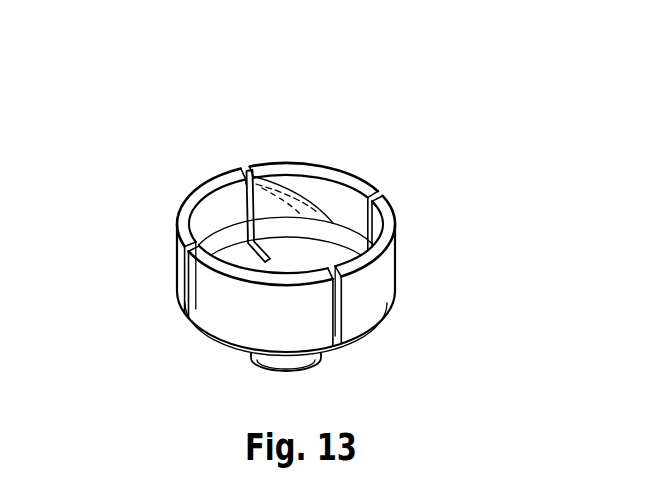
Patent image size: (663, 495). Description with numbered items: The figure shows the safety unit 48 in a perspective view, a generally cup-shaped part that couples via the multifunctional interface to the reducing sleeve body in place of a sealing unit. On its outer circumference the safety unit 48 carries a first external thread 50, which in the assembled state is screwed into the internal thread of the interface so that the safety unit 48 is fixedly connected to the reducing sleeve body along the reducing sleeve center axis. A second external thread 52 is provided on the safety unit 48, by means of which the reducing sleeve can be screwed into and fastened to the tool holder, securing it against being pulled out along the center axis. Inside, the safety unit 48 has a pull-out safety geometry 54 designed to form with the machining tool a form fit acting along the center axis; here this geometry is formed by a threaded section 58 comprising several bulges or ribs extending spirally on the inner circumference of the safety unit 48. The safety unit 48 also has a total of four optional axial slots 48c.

The safety unit 48 is at (308, 248).
The axial slots 48c is at (234, 156).
The first external thread 50 is at (400, 281).
The second external thread 52 is at (342, 370).
The pull-out safety geometry 54 is at (290, 170).
The threaded section 58 is at (300, 203).